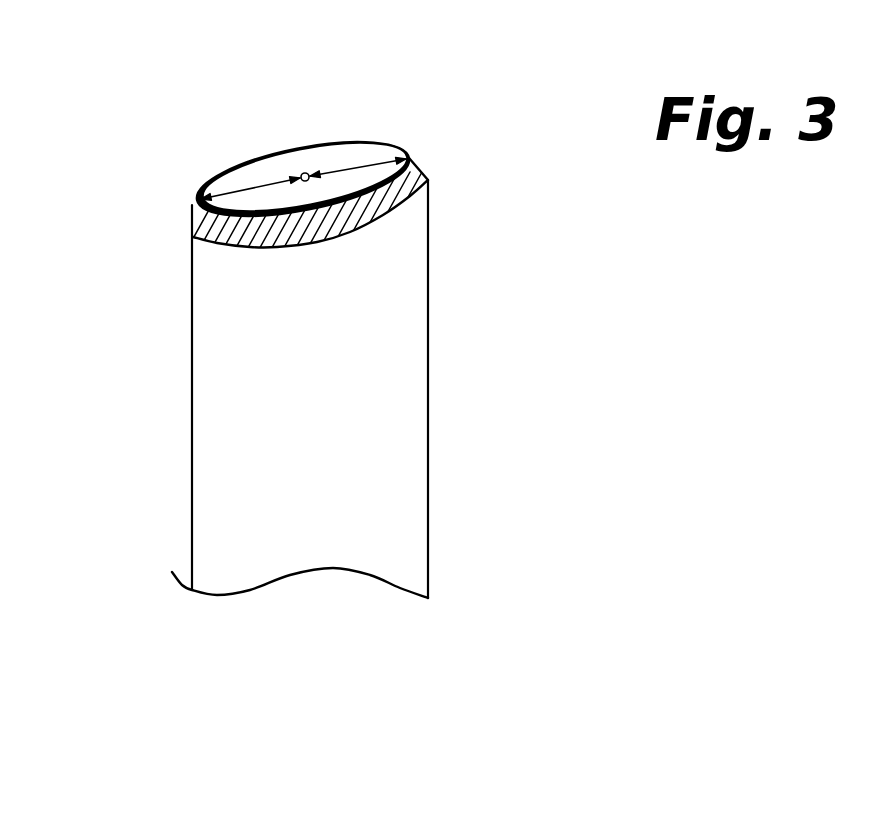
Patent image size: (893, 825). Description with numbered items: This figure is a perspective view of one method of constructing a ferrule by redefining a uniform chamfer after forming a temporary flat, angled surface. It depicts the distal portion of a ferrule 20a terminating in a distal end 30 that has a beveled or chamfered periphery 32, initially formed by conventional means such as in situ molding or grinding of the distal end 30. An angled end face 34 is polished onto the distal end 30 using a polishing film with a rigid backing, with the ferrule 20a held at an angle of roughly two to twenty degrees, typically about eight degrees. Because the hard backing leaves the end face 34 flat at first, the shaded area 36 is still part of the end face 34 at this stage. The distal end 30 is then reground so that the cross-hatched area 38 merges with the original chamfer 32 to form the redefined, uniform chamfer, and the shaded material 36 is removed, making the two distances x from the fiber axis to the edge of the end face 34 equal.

The distal end 30 is at (180, 307).
The chamfered periphery 32 is at (416, 160).
The angled end face 34 is at (307, 152).
The shaded area 36 is at (197, 203).
The cross-hatched area 38 is at (249, 243).
The ferrule 20a is at (492, 381).